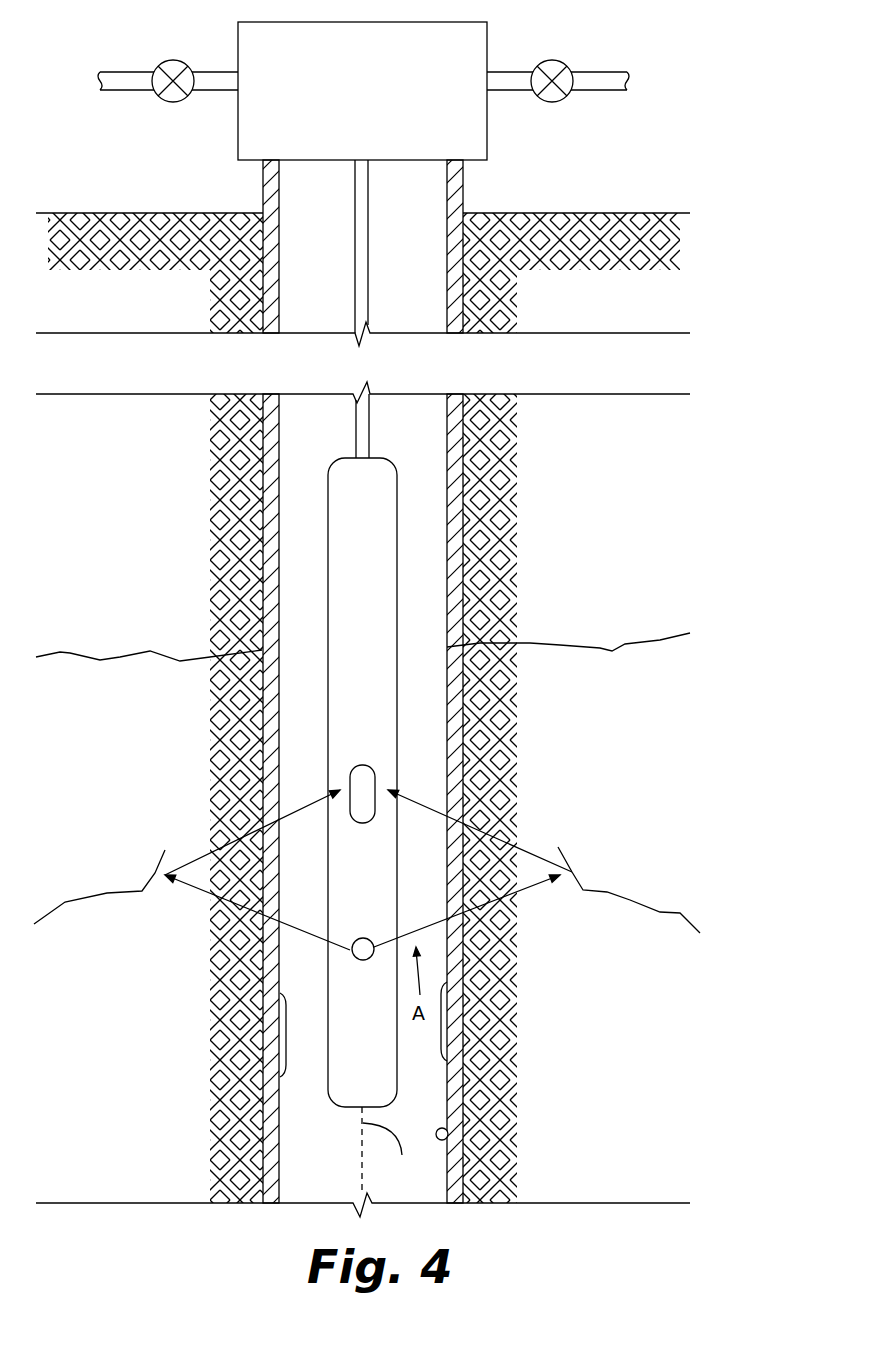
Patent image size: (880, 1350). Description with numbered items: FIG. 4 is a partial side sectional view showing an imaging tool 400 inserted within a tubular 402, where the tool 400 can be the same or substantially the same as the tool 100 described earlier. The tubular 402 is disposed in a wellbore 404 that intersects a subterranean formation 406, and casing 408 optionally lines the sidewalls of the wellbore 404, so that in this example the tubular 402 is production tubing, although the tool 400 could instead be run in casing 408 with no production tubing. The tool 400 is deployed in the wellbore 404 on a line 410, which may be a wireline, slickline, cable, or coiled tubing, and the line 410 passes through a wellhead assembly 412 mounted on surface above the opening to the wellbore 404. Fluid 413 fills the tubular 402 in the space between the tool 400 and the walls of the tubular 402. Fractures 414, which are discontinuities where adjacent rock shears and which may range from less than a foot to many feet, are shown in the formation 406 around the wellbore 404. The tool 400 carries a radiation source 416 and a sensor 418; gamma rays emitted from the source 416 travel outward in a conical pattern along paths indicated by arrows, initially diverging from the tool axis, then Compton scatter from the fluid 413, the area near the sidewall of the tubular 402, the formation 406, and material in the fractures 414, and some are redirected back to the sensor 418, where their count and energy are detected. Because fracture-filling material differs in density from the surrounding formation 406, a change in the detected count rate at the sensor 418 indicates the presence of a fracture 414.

The tool 100 is at (330, 1095).
The imaging tool 400 is at (305, 533).
The tubular 402 is at (447, 1144).
The wellbore 404 is at (417, 435).
The subterranean formation 406 is at (238, 1047).
The casing 408 is at (463, 1095).
The line 410 is at (355, 210).
The wellhead assembly 412 is at (572, 162).
The fluid 413 is at (308, 436).
The fractures 414 is at (562, 645).
The source 416 is at (352, 951).
The sensor 418 is at (352, 775).